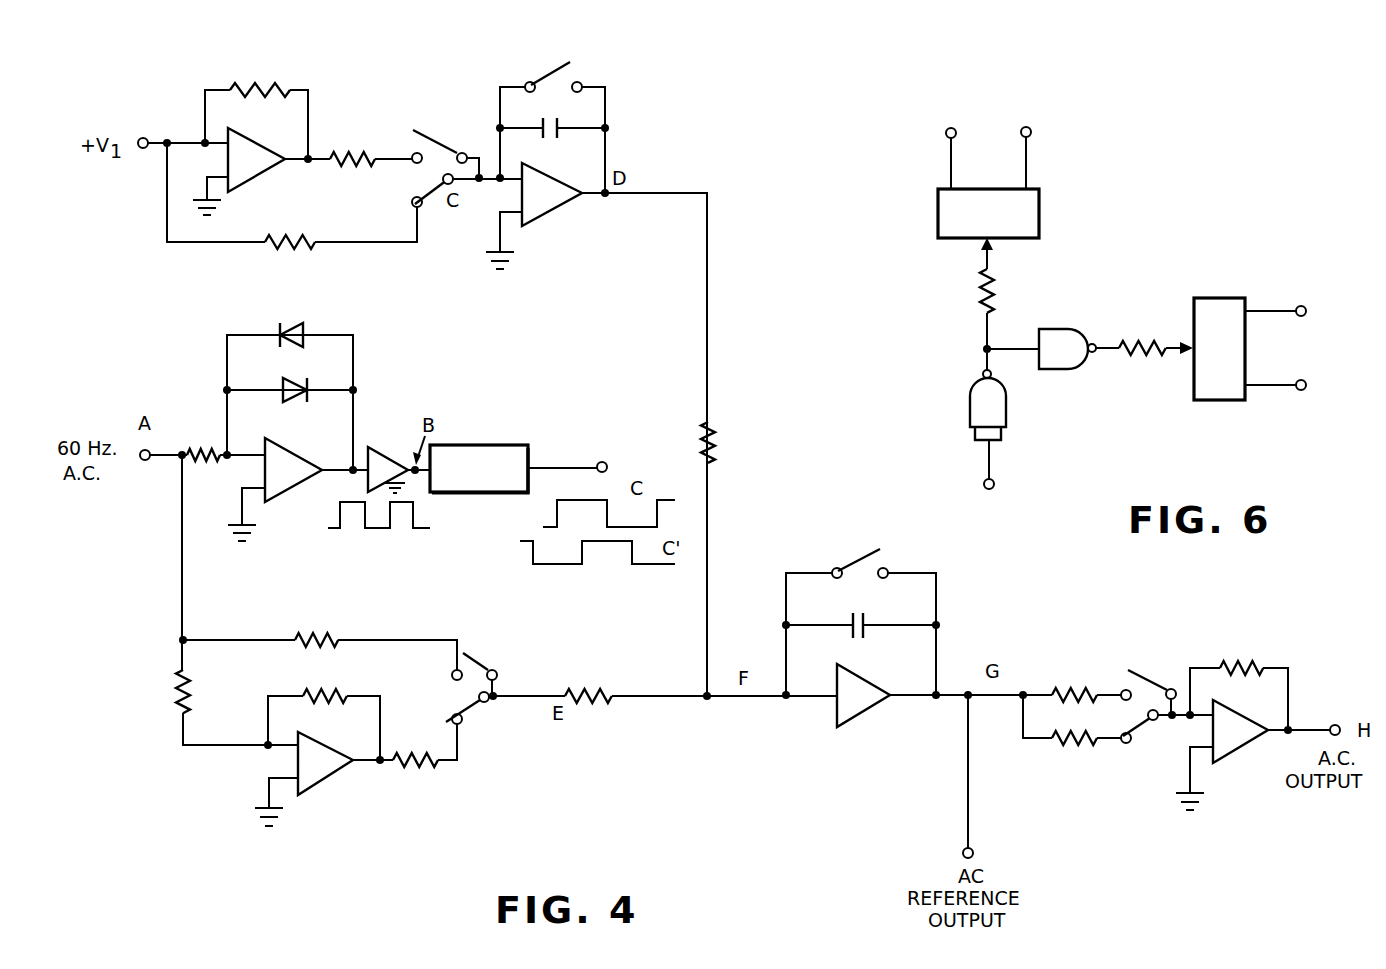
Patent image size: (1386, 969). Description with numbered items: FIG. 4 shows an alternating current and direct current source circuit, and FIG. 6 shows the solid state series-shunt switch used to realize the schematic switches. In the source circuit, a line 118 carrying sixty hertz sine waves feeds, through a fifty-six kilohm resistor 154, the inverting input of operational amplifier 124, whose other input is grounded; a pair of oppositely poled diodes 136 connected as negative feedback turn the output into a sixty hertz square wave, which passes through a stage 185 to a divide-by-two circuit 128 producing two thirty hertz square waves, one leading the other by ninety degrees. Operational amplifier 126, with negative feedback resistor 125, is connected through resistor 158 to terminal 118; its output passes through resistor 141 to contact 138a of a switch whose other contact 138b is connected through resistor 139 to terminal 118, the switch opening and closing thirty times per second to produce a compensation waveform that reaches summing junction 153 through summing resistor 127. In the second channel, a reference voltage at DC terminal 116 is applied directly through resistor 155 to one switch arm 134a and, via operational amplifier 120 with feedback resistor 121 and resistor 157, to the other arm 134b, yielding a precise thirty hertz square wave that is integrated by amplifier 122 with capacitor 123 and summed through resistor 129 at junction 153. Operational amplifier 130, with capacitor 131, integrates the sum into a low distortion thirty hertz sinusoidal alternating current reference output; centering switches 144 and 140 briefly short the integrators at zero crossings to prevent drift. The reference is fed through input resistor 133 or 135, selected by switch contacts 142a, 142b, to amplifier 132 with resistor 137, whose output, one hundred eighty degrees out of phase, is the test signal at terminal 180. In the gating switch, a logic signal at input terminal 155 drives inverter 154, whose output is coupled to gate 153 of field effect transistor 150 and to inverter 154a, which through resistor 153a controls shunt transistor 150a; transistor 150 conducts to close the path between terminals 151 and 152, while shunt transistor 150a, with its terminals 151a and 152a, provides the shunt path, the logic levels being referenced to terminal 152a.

In FIG. 4, the DC reference terminal 116 is at (152, 136).
In FIG. 4, the operational amplifier 120 is at (245, 175).
In FIG. 4, the negative feedback resistor 121 is at (280, 88).
In FIG. 4, the resistor 157 is at (370, 150).
In FIG. 4, the switch contact 134b is at (452, 145).
In FIG. 4, the switch contact 134a is at (412, 180).
In FIG. 4, the resistor 155 is at (283, 246).
In FIG. 6, the resistor 155 is at (994, 484).
In FIG. 4, the integrating amplifier 122 is at (543, 202).
In FIG. 4, the capacitor 123 is at (560, 136).
In FIG. 4, the centering switch 144 is at (548, 73).
In FIG. 4, the alternating current terminal 118 is at (150, 447).
In FIG. 4, the inverter 154 is at (205, 460).
In FIG. 6, the inverter 154 is at (968, 407).
In FIG. 4, the operational amplifier 124 is at (290, 480).
In FIG. 4, the pair of oppositely poled diodes 136 is at (308, 383).
In FIG. 4, the buffer amplifier 185 is at (385, 455).
In FIG. 4, the divide-by-two circuit 128 is at (475, 494).
In FIG. 4, the summing resistor 129 is at (700, 450).
In FIG. 4, the resistor 158 is at (175, 688).
In FIG. 4, the resistor 139 is at (318, 632).
In FIG. 4, the operational amplifier 126 is at (322, 767).
In FIG. 4, the negative feedback resistor 125 is at (327, 688).
In FIG. 4, the resistor 141 is at (407, 770).
In FIG. 4, the switch contact 138b is at (522, 660).
In FIG. 4, the switch contact 138a is at (470, 707).
In FIG. 4, the summing resistor 127 is at (587, 700).
In FIG. 4, the summing junction 153 is at (707, 702).
In FIG. 6, the summing junction 153 is at (995, 293).
In FIG. 4, the operational amplifier 130 is at (855, 702).
In FIG. 4, the capacitor 131 is at (865, 621).
In FIG. 4, the centering switch 140 is at (845, 566).
In FIG. 4, the input resistor 133 is at (1072, 688).
In FIG. 4, the input resistor 135 is at (1070, 743).
In FIG. 4, the switch contact 142b is at (1162, 673).
In FIG. 4, the switch contact 142a is at (1143, 727).
In FIG. 4, the amplifier 132 is at (1238, 738).
In FIG. 4, the resistor 137 is at (1230, 675).
In FIG. 4, the terminal 180 is at (1335, 723).
In FIG. 6, the terminal 151 is at (946, 133).
In FIG. 6, the terminal 152 is at (1030, 129).
In FIG. 6, the field effect transistor 150 is at (1040, 204).
In FIG. 6, the resistor 153a is at (1130, 342).
In FIG. 6, the inverter 154a is at (1061, 368).
In FIG. 6, the field effect transistor 150a is at (1219, 401).
In FIG. 6, the output terminal 151a is at (1301, 306).
In FIG. 6, the terminal 152a is at (1301, 390).